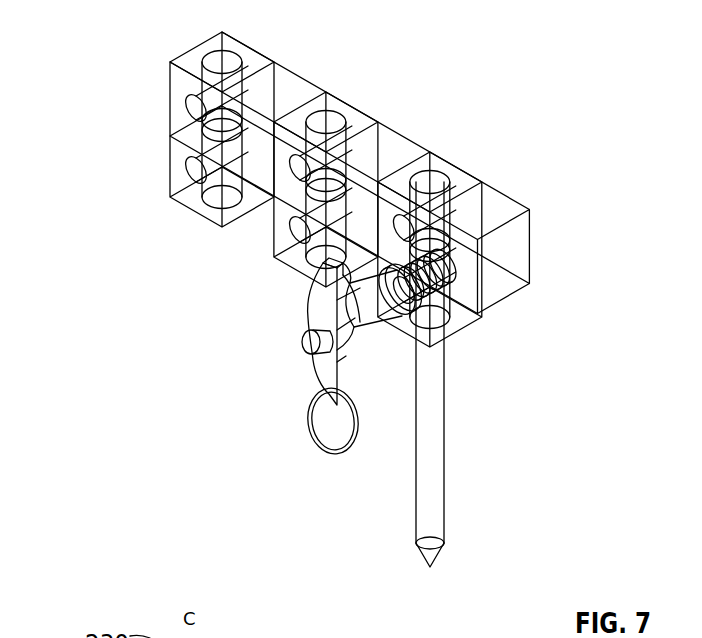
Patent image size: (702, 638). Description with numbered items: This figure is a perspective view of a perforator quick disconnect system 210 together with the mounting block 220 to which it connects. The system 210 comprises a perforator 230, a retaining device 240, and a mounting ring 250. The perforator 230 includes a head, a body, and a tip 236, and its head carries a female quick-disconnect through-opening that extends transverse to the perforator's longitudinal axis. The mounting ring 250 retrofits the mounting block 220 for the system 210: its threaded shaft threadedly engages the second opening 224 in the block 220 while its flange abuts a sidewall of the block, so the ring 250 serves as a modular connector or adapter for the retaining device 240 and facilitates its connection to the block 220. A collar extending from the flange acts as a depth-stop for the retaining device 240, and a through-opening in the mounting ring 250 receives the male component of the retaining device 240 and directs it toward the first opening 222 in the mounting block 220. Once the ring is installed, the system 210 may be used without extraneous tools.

The perforator quick disconnect system 210 is at (118, 58).
The mounting block 220 is at (506, 286).
The first opening 222 is at (217, 208).
The second opening 224 is at (172, 182).
The perforator 230 is at (449, 417).
The tip 236 is at (435, 572).
The retaining device 240 is at (289, 331).
The mounting ring 250 is at (376, 351).